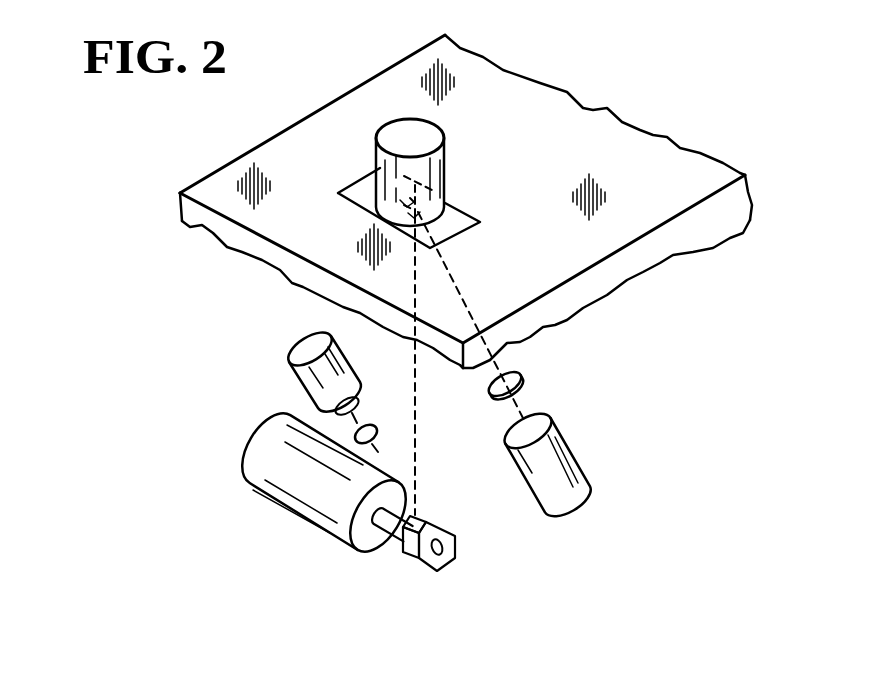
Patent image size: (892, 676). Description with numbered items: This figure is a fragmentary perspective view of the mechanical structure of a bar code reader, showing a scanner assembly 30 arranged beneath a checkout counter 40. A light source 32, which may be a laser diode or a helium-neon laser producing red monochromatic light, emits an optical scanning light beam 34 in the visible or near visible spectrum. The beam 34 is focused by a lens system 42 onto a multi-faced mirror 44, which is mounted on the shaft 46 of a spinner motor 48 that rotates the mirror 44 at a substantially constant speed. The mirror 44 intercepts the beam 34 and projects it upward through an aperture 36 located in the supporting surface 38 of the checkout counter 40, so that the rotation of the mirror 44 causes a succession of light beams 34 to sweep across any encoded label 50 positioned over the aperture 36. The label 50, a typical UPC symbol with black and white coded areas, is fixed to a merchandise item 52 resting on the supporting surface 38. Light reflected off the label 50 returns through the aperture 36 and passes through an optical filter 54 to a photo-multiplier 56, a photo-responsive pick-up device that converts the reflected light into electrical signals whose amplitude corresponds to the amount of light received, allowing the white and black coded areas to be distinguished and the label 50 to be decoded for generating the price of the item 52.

The scanner assembly 30 is at (146, 385).
The light source 32 is at (293, 342).
The light beam 34 is at (420, 462).
The aperture 36 is at (356, 184).
The supporting surface 38 is at (668, 136).
The checkout counter 40 is at (669, 280).
The lens system 42 is at (375, 427).
The multi-faced mirror 44 is at (445, 569).
The shaft 46 is at (392, 527).
The spinner motor 48 is at (257, 450).
The label 50 is at (428, 185).
The merchandise item 52 is at (430, 134).
The optical filter 54 is at (525, 373).
The photo-multiplier 56 is at (582, 465).